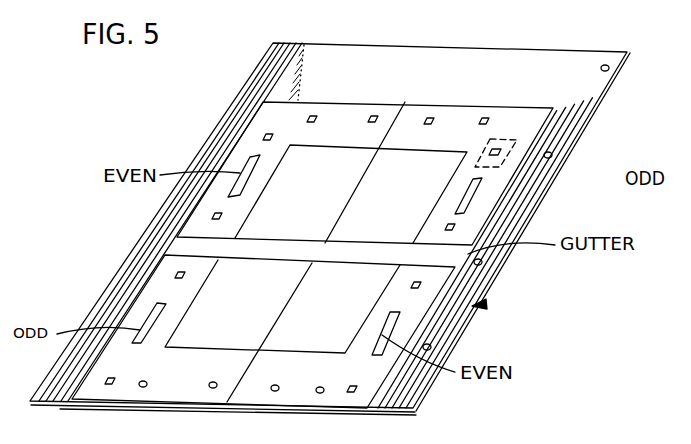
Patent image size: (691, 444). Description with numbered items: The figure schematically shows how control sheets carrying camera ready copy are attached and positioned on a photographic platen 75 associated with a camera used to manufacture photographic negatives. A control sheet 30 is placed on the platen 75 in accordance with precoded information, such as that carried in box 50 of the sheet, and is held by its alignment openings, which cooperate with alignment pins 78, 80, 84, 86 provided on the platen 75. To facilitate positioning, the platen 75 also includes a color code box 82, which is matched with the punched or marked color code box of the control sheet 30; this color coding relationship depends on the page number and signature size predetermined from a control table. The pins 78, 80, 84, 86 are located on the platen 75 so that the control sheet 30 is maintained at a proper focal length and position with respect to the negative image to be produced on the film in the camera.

The control sheet 30 is at (553, 112).
The precoded information box 50 is at (478, 191).
The platen 75 is at (485, 303).
The alignment pin 78 is at (434, 117).
The alignment pin 80 is at (490, 117).
The color code box 82 is at (522, 140).
The alignment pin 84 is at (377, 117).
The alignment pin 86 is at (316, 112).